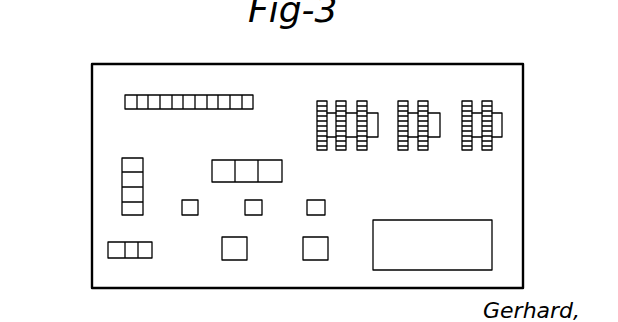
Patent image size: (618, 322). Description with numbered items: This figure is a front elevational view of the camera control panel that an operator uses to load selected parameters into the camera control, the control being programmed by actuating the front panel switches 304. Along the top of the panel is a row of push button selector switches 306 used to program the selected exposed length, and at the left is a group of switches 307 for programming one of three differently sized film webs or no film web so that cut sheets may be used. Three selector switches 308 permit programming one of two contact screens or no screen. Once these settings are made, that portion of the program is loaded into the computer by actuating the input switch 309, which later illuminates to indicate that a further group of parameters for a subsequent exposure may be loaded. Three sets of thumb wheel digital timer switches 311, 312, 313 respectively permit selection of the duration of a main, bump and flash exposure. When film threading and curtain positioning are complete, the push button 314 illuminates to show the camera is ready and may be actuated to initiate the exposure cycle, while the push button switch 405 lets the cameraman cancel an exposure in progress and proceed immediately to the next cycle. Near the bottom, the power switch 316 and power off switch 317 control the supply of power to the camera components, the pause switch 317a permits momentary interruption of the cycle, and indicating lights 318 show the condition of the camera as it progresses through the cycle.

The front panel switches 304 is at (505, 172).
The push button selector switches 306 is at (128, 109).
The group of switches 307 is at (125, 205).
The selector switches 308 is at (272, 165).
The input switch 309 is at (193, 200).
The thumb wheel digital timer switches 311 is at (341, 100).
The thumb wheel digital timer switches 312 is at (413, 100).
The thumb wheel digital timer switches 313 is at (478, 97).
The push button 314 is at (262, 208).
The push button switch 405 is at (325, 208).
The power switch 316 is at (115, 253).
The pause switch 317a is at (133, 255).
The power off switch 317 is at (146, 255).
The indicating lights 318 is at (238, 250).